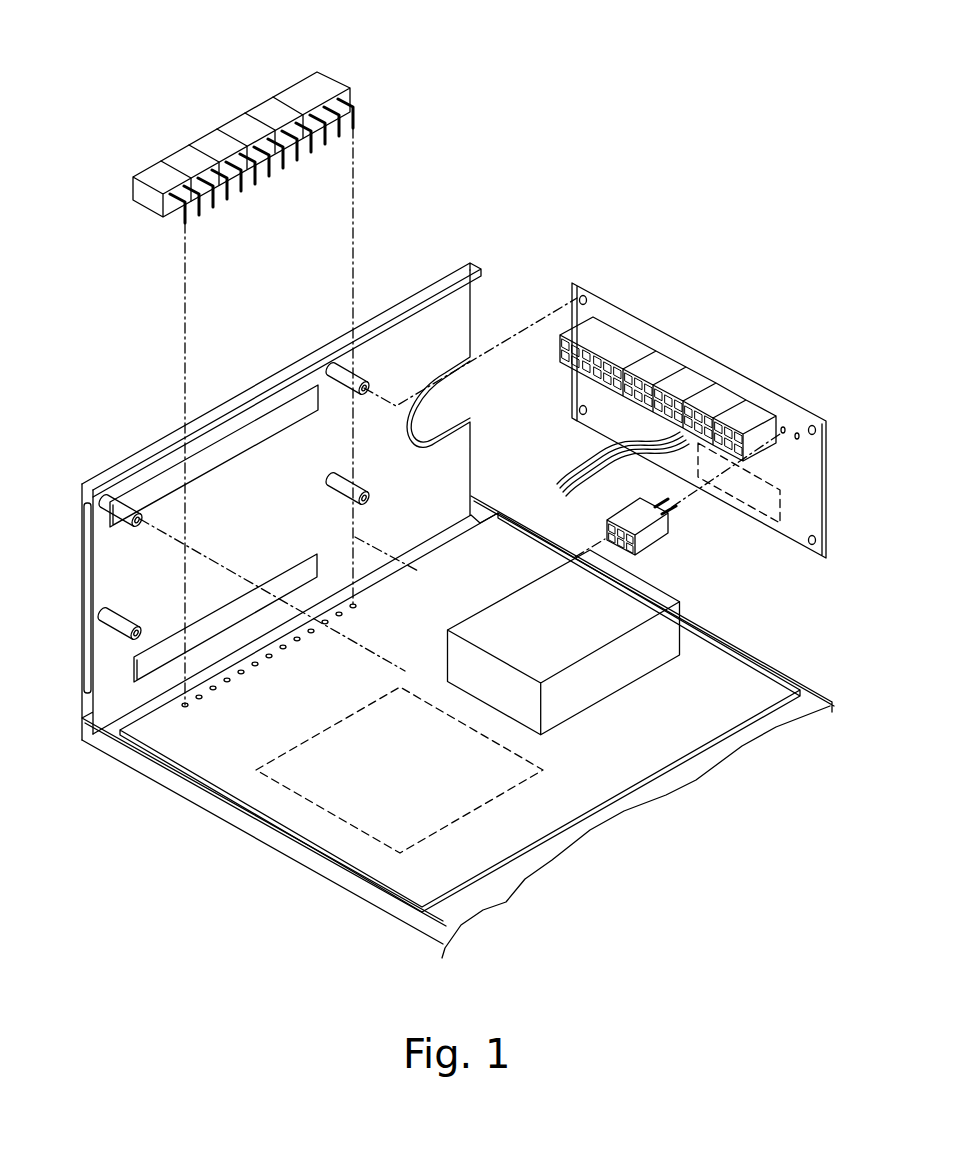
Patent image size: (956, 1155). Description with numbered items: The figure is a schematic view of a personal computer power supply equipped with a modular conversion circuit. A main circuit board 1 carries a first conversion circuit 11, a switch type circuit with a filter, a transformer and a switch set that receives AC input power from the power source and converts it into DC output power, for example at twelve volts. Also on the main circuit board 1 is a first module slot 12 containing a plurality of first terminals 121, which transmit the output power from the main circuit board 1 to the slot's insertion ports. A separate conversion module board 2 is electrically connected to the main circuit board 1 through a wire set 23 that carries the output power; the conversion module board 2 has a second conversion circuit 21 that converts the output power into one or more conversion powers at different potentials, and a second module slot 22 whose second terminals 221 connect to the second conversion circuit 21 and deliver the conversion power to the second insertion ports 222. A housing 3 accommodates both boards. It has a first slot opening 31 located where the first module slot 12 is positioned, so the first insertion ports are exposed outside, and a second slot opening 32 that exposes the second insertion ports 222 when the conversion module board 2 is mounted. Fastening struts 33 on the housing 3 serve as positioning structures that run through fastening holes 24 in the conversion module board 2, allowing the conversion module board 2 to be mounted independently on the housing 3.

The main circuit board 1 is at (491, 862).
The first conversion circuit 11 is at (359, 829).
The first module slot 12 is at (325, 85).
The first terminals 121 is at (360, 115).
The conversion module board 2 is at (765, 403).
The second conversion circuit 21 is at (767, 527).
The second module slot 22 is at (648, 540).
The second terminals 221 is at (673, 510).
The second insertion ports 222 is at (630, 377).
The wire set 23 is at (572, 463).
The fastening holes 24 is at (571, 290).
The housing 3 is at (369, 892).
The first slot opening 31 is at (144, 666).
The second slot opening 32 is at (245, 438).
The fastening struts 33 is at (327, 365).